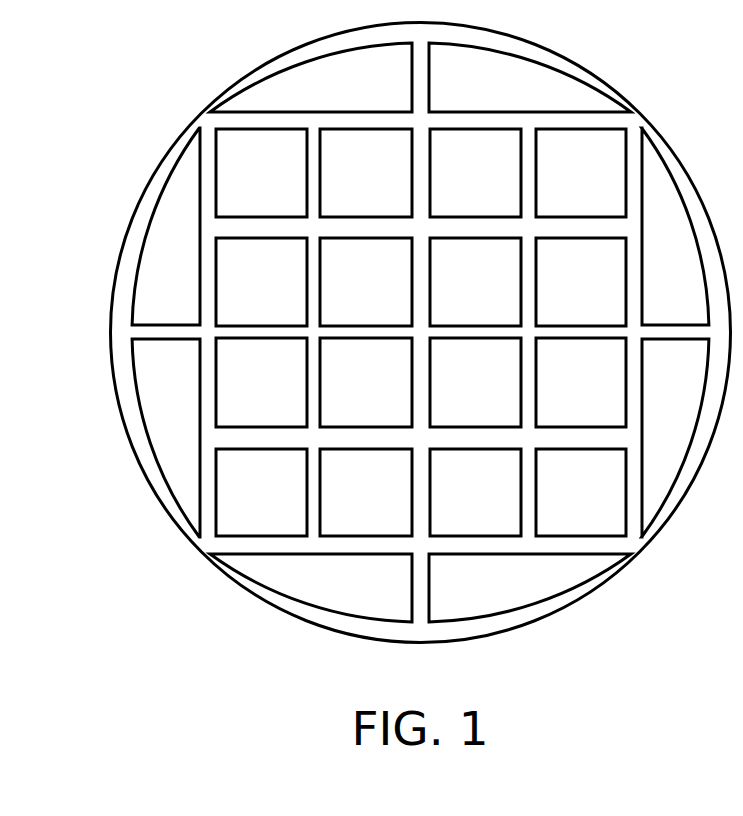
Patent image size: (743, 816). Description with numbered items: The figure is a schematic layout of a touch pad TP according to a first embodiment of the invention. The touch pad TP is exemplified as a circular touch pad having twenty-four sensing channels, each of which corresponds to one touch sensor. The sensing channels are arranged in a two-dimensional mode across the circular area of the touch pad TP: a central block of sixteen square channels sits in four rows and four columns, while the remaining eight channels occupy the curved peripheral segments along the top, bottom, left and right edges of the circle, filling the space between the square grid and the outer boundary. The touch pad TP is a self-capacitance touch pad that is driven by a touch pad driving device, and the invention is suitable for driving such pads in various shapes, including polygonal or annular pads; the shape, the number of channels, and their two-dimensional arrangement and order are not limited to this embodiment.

The touch pad TP is at (603, 77).